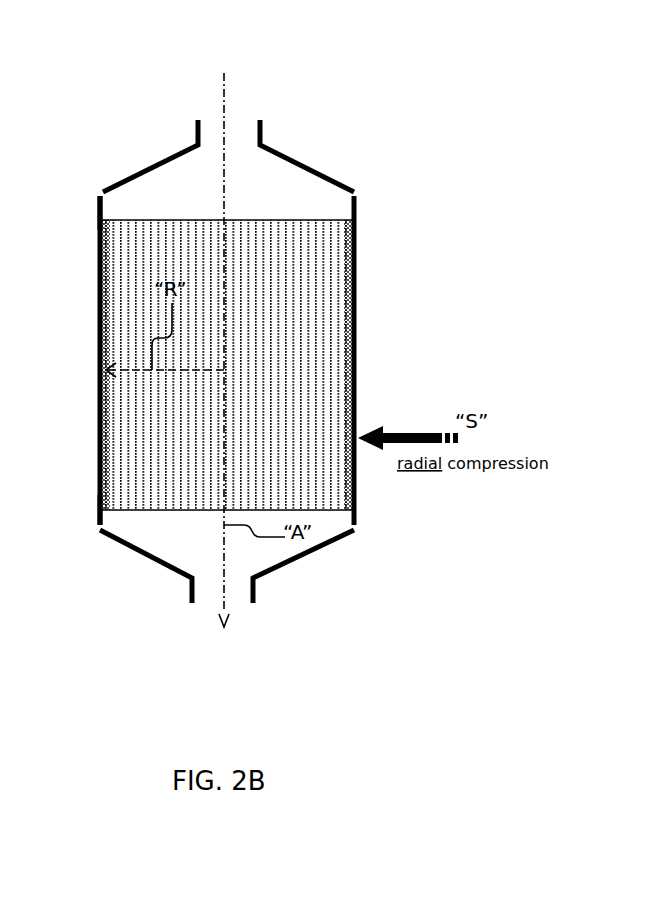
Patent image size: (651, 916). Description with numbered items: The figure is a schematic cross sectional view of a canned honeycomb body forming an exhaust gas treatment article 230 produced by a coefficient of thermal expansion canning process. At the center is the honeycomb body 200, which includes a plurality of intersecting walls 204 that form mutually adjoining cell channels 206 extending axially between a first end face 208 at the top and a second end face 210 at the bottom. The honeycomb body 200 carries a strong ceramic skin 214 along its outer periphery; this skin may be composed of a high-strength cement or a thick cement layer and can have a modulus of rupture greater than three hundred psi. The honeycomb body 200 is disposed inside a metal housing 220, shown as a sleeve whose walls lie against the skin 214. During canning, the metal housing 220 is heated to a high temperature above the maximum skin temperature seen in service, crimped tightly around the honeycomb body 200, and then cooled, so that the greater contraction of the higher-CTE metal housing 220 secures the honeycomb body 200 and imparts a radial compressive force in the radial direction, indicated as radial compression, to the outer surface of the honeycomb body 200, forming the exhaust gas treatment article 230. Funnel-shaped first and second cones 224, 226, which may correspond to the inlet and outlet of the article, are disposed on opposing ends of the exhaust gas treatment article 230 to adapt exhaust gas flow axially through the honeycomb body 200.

The exhaust gas treatment article 230 is at (120, 62).
The first cone 224 is at (333, 167).
The metal housing 220 is at (365, 203).
The second cone 226 is at (297, 560).
The honeycomb body 200 is at (309, 365).
The strong ceramic skin 214 is at (361, 296).
The cell channels 206 is at (307, 243).
The intersecting walls 204 is at (322, 495).
The first end face 208 is at (150, 211).
The second end face 210 is at (172, 518).